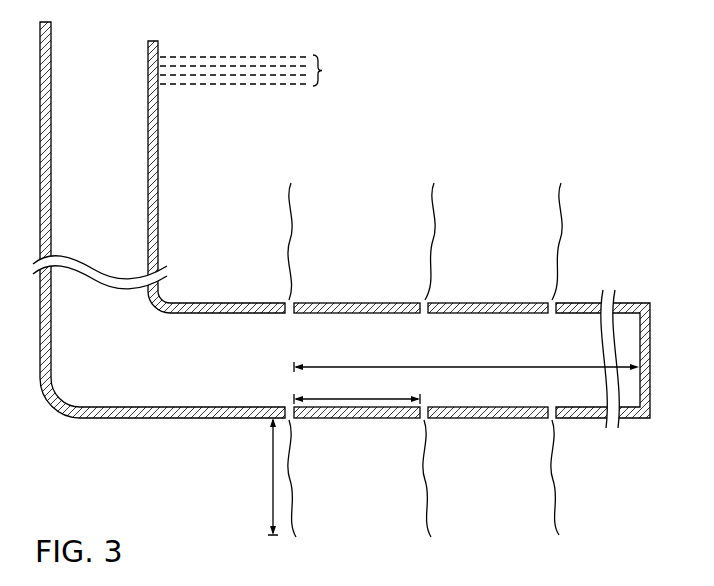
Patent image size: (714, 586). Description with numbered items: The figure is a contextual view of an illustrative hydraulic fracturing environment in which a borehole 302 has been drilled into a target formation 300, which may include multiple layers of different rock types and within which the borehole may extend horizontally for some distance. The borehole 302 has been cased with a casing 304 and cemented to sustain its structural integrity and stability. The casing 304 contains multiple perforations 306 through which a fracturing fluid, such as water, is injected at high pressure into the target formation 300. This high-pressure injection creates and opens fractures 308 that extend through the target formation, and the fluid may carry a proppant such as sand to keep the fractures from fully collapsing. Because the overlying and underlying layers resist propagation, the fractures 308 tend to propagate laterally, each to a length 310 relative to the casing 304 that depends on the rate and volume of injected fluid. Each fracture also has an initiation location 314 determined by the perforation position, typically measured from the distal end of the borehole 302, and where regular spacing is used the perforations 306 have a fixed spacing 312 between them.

The target formation 300 is at (258, 71).
The borehole 302 is at (121, 115).
The casing 304 is at (157, 133).
The perforations 306 is at (289, 314).
The fractures 308 is at (297, 196).
The length 310 is at (273, 483).
The spacing 312 is at (345, 418).
The initiation location 314 is at (563, 368).